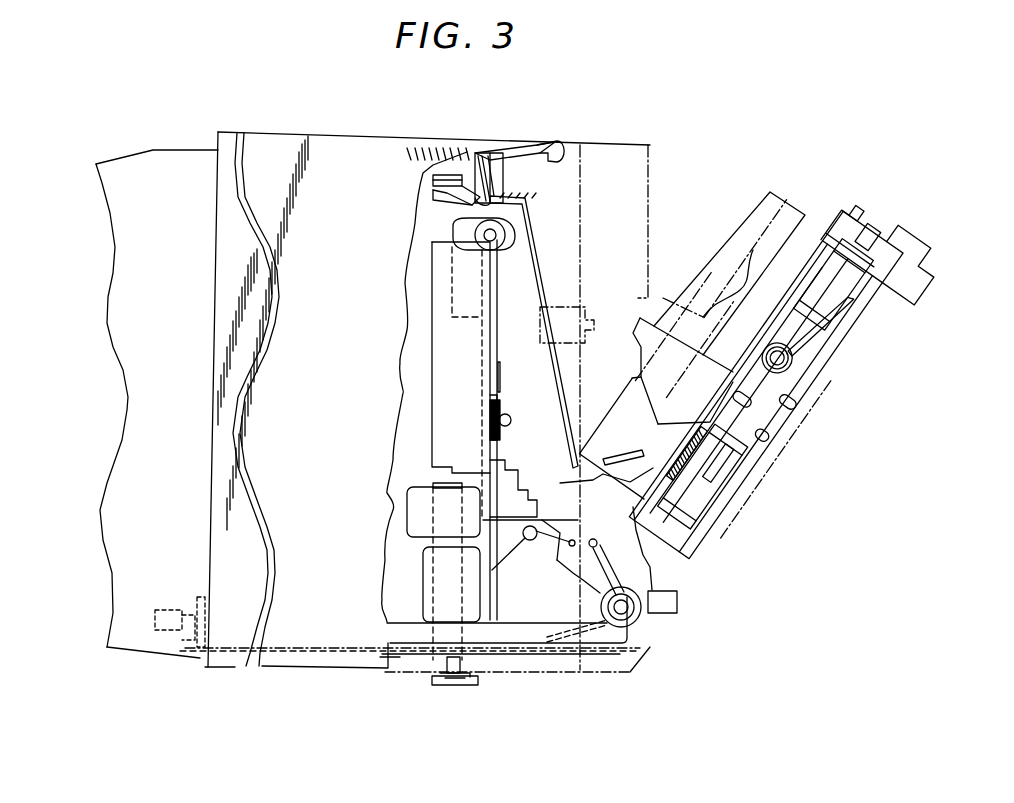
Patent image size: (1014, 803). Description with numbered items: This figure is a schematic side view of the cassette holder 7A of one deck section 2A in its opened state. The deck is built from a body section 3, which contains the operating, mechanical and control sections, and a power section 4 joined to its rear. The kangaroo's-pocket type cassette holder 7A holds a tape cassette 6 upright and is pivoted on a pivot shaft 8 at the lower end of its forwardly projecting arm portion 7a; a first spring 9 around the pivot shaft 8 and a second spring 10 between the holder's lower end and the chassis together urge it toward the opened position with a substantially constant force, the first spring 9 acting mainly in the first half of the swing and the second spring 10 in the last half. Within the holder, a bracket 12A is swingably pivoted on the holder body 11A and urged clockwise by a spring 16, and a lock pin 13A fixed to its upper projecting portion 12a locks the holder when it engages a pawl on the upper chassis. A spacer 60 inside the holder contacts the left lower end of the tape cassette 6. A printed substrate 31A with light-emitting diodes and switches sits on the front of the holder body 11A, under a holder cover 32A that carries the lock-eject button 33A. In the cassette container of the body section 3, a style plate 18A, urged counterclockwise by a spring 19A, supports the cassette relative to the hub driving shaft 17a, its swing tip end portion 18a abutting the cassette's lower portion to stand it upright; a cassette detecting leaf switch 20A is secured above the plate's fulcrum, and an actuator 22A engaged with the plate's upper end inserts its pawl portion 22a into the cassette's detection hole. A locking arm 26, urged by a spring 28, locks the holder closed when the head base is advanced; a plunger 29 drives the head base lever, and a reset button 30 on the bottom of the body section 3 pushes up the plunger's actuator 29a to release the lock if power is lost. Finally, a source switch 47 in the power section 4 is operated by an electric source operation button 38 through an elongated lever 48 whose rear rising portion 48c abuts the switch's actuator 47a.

The deck section 2A is at (795, 121).
The body section 3 is at (305, 150).
The power section 4 is at (162, 152).
The tape cassette 6 is at (788, 198).
The cassette holder 7A is at (663, 537).
The arm portion 7a is at (645, 635).
The pivot shaft 8 is at (611, 607).
The first spring 9 is at (588, 633).
The second spring 10 is at (513, 547).
The holder body 11A is at (700, 327).
The bracket 12A is at (843, 287).
The upper projecting portion 12a is at (873, 230).
The lock pin 13A is at (843, 210).
The spring 16 is at (827, 333).
The hub driving shaft 17a is at (562, 303).
The style plate 18A is at (562, 400).
The swing tip end portion 18a is at (578, 470).
The spring 19A is at (472, 143).
The cassette detecting leaf switch 20A is at (535, 170).
The actuator 22A is at (550, 140).
The pawl portion 22a is at (600, 140).
The locking arm 26 is at (503, 375).
The spring 28 is at (477, 410).
The plunger 29 is at (427, 547).
The actuator 29a is at (443, 603).
The reset button 30 is at (455, 686).
The printed substrate 31A is at (735, 485).
The holder cover 32A is at (803, 443).
The lock-eject button 33A is at (930, 283).
The electric source operation button 38 is at (675, 603).
The source switch 47 is at (152, 630).
The actuator 47a is at (190, 627).
The elongated lever 48 is at (400, 655).
The rear rising portion 48c is at (210, 640).
The spacer 60 is at (728, 490).